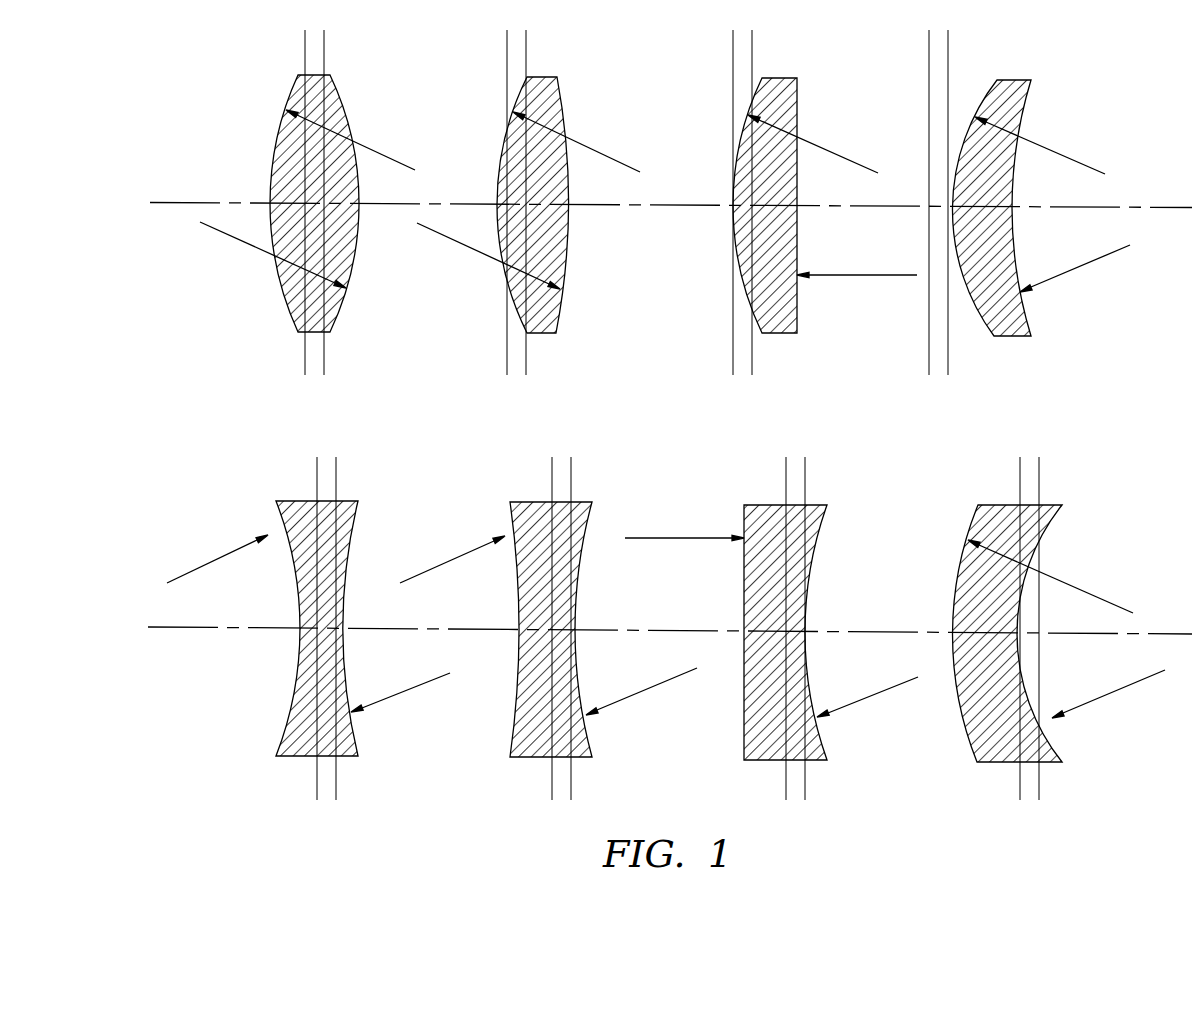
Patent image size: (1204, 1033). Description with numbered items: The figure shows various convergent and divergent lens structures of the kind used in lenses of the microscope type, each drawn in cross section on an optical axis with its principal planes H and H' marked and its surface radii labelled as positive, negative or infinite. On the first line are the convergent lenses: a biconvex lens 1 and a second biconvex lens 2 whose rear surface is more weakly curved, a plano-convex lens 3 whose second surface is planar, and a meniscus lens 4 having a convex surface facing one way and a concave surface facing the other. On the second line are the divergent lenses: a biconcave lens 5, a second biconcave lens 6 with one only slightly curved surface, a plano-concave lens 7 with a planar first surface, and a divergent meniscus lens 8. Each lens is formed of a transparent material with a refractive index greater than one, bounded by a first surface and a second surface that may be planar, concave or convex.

The biconvex convergent lens 1 is at (307, 202).
The biconvex convergent lens 2 is at (528, 202).
The plano-convex convergent lens 3 is at (809, 202).
The meniscus convergent lens 4 is at (1019, 202).
The biconcave divergent lens 5 is at (307, 628).
The biconcave divergent lens 6 is at (546, 628).
The plano-concave divergent lens 7 is at (771, 628).
The meniscus divergent lens 8 is at (1059, 628).